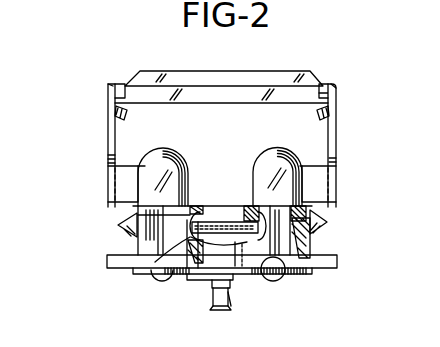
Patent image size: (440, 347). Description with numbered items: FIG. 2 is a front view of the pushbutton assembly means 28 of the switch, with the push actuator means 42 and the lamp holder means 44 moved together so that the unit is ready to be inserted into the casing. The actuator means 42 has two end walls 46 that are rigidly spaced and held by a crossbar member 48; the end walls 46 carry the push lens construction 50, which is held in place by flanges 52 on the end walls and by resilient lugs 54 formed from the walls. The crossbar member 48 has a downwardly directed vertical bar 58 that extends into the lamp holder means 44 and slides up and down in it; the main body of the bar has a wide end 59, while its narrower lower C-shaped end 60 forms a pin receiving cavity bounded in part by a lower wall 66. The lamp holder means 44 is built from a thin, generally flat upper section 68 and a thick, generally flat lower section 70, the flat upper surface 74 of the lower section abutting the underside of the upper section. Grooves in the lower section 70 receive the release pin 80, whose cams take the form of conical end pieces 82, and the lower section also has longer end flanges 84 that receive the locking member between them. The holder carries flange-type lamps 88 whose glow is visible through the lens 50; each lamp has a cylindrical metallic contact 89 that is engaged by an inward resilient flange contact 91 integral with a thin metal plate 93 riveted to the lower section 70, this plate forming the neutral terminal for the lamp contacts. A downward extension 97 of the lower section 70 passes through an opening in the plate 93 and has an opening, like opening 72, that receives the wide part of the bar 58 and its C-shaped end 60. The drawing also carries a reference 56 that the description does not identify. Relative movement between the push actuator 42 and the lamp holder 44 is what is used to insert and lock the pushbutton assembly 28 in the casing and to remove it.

The pushbutton assembly means 28 is at (376, 68).
The push actuator means 42 is at (76, 92).
The lamp holder means 44 is at (66, 241).
The end walls 46 is at (108, 138).
The crossbar member 48 is at (198, 182).
The push lens construction 50 is at (231, 71).
The flanges 52 is at (113, 86).
The resilient lugs 54 is at (114, 119).
The lip 56 is at (118, 96).
The vertical bar 58 is at (219, 214).
The wide end 59 is at (208, 272).
The lower C-shaped end 60 is at (218, 292).
The lower wall 66 is at (225, 308).
The upper section 68 is at (133, 209).
The lower section 70 is at (143, 243).
The opening 72 is at (246, 170).
The upper surface 74 is at (165, 165).
The release pin 80 is at (302, 212).
The conical end pieces 82 is at (118, 225).
The longer end flanges 84 is at (113, 268).
The lamps 88 is at (143, 166).
The cylindrical metallic contacts 89 is at (175, 252).
The flange contacts 91 is at (200, 252).
The thin metal plate 93 is at (277, 258).
The downward extension 97 is at (208, 282).